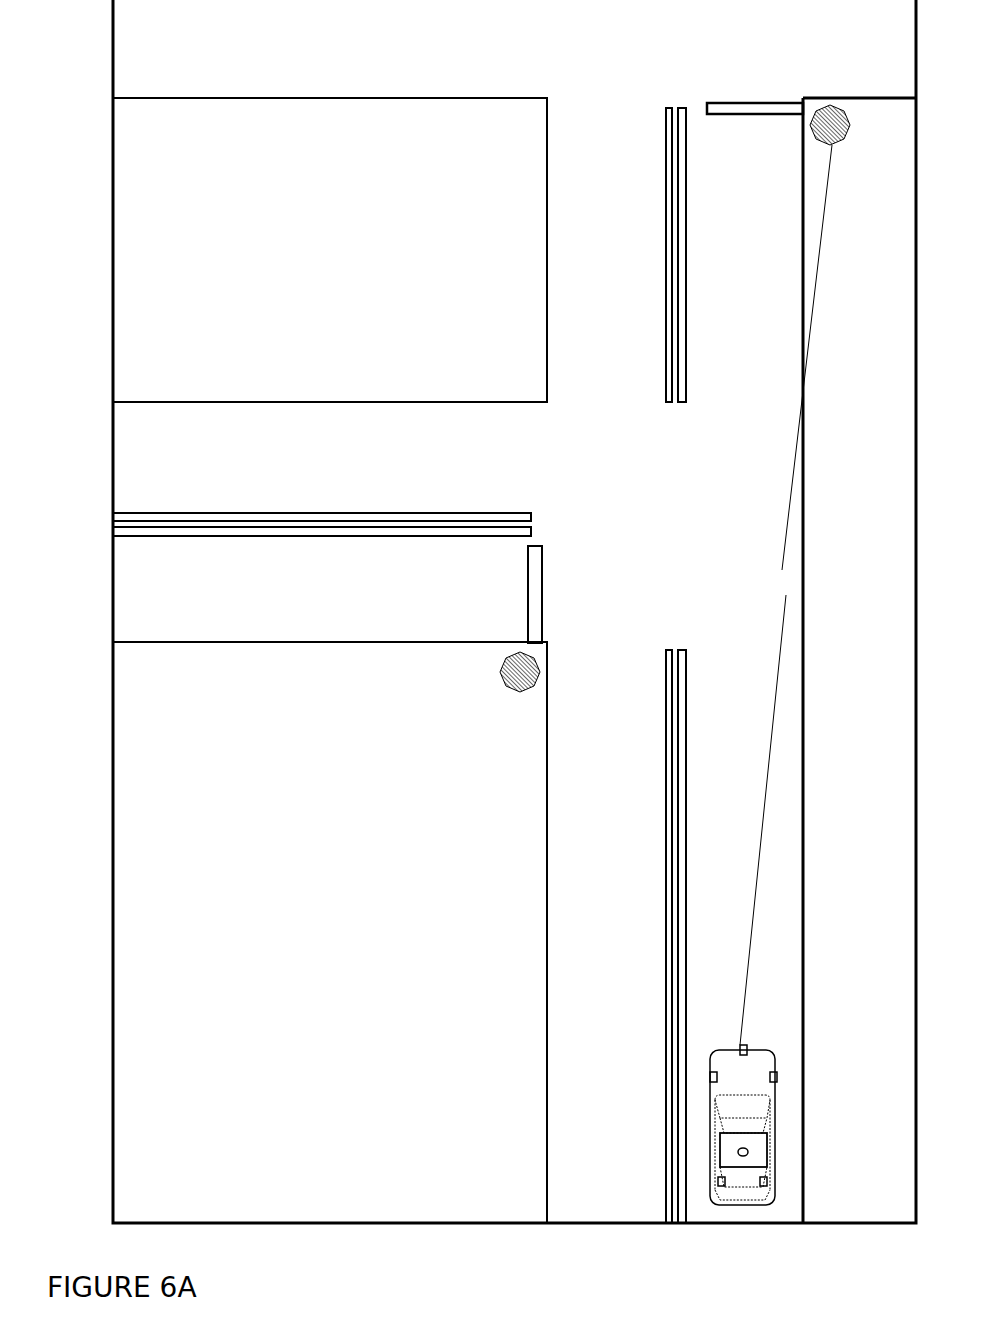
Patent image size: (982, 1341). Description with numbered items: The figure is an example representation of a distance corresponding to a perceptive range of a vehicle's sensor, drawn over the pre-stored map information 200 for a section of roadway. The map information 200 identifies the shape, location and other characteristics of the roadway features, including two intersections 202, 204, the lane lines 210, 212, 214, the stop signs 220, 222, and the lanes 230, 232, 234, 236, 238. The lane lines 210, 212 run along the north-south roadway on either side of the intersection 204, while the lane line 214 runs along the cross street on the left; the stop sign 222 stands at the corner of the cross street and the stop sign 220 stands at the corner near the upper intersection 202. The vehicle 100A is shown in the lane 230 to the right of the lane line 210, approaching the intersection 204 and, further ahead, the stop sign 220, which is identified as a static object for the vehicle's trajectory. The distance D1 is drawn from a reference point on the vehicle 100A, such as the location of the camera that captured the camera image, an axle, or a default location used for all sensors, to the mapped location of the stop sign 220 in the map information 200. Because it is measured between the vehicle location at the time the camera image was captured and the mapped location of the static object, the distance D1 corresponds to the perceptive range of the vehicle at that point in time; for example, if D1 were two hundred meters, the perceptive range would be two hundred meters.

The map information 200 is at (140, 1258).
The intersection 202 is at (686, 40).
The intersection 204 is at (693, 526).
The lane line 210 is at (686, 1208).
The lane line 212 is at (667, 228).
The lane line 214 is at (113, 520).
The stop sign 220 is at (829, 146).
The stop sign 222 is at (522, 691).
The lane 230 is at (758, 708).
The lane 232 is at (629, 706).
The lane 234 is at (179, 591).
The lane 236 is at (179, 463).
The lane 238 is at (188, 30).
The distance D1 is at (786, 595).
The vehicle 100A is at (776, 1148).